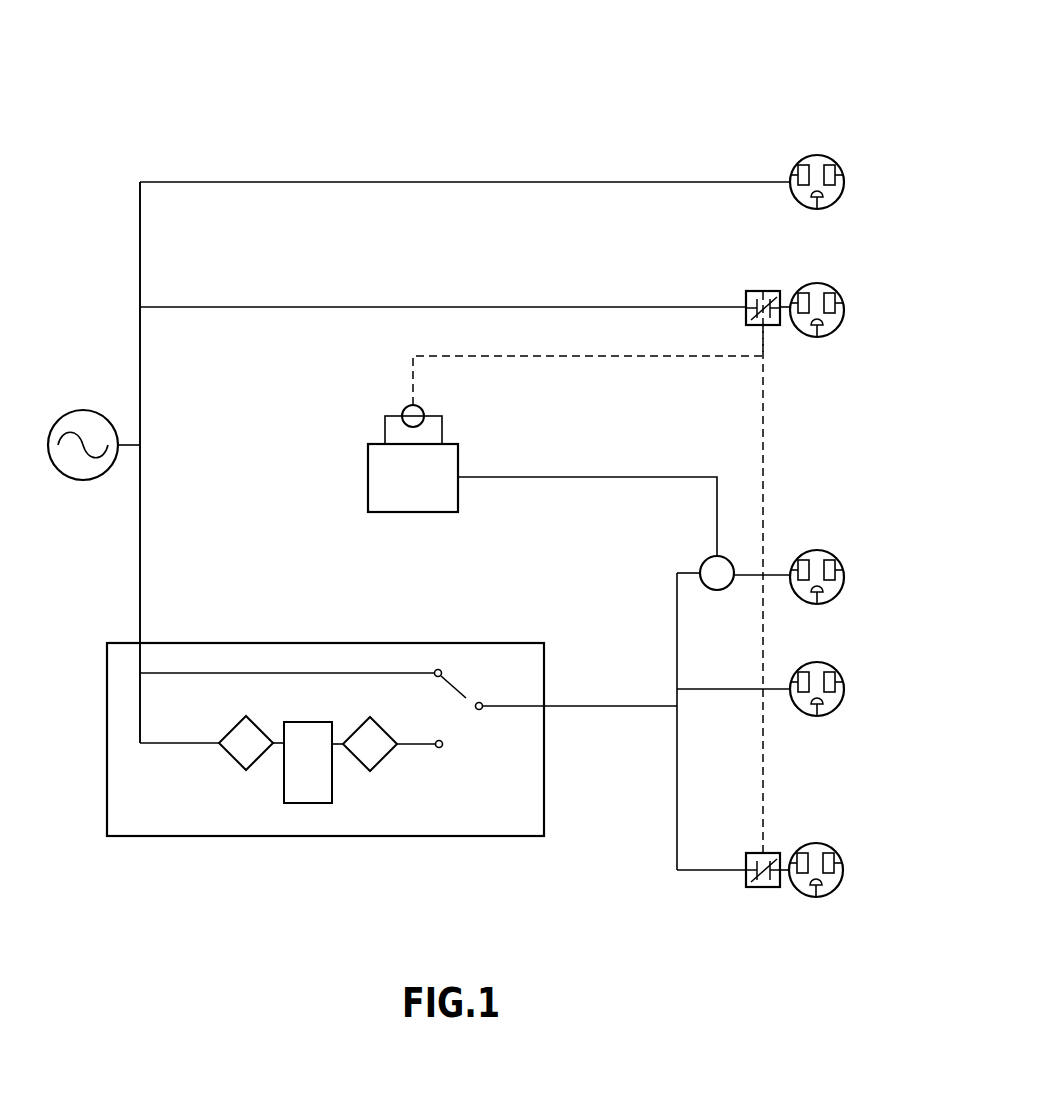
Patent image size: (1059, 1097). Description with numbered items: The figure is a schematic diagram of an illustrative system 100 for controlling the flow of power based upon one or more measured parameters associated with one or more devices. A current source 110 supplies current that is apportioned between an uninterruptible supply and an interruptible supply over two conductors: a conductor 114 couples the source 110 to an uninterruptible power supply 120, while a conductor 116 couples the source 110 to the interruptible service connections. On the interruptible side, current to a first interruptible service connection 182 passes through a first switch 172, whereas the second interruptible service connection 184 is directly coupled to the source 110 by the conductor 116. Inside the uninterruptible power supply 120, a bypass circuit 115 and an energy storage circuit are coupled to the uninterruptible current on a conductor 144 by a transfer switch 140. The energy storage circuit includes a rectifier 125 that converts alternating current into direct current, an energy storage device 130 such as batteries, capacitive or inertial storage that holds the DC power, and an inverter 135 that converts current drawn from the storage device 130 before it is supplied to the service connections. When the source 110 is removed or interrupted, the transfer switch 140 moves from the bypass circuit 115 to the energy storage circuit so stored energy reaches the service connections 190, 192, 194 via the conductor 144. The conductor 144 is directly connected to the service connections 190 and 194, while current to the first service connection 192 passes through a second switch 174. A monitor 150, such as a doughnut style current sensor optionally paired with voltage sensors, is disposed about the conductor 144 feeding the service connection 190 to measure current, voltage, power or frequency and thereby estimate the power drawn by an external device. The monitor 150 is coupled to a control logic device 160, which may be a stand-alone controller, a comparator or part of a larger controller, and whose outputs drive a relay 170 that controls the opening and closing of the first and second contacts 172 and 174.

The system 100 is at (644, 106).
The current source 110 is at (65, 411).
The conductor 114 is at (141, 551).
The bypass circuit 115 is at (345, 672).
The conductor 116 is at (141, 384).
The uninterruptible power supply 120 is at (268, 837).
The rectifier 125 is at (229, 758).
The energy storage device 130 is at (283, 793).
The inverter 135 is at (381, 761).
The transfer switch 140 is at (462, 690).
The conductor 144 is at (576, 705).
The monitor 150 is at (717, 591).
The control logic device 160 is at (460, 502).
The relay 170 is at (403, 408).
The first switch 172 is at (746, 293).
The second switch 174 is at (746, 878).
The first interruptible service connection 182 is at (806, 336).
The second interruptible service connection 184 is at (793, 197).
The service connection 190 is at (820, 604).
The first service connection 192 is at (803, 894).
The service connection 194 is at (810, 717).